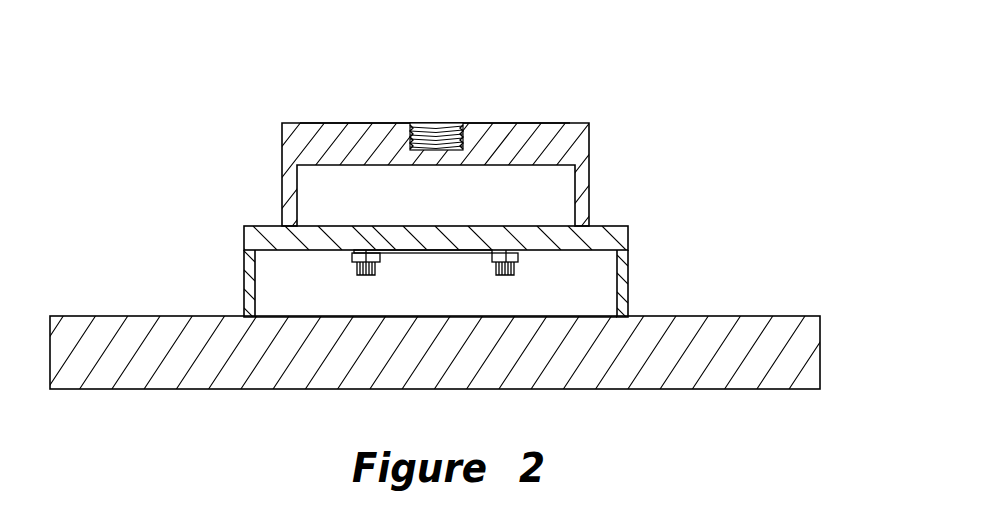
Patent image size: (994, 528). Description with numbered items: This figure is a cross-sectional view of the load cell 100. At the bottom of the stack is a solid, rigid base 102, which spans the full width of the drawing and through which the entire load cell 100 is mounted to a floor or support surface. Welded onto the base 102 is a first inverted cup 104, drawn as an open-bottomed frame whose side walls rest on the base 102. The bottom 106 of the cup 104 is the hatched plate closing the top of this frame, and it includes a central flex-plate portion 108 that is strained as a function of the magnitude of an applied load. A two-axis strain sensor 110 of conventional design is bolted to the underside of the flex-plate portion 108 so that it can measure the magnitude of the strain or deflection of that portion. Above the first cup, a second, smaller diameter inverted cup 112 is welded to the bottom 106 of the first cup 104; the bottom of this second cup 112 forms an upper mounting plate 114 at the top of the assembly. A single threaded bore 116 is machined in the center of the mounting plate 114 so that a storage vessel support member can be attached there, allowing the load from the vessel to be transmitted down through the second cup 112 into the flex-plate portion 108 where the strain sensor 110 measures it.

The load cell 100 is at (720, 124).
The base 102 is at (782, 329).
The first inverted cup 104 is at (628, 288).
The bottom of the cup 106 is at (603, 226).
The flex-plate portion 108 is at (463, 232).
The two-axis strain sensor 110 is at (439, 266).
The second inverted cup 112 is at (590, 147).
The upper mounting plate 114 is at (524, 123).
The threaded bore 116 is at (450, 123).